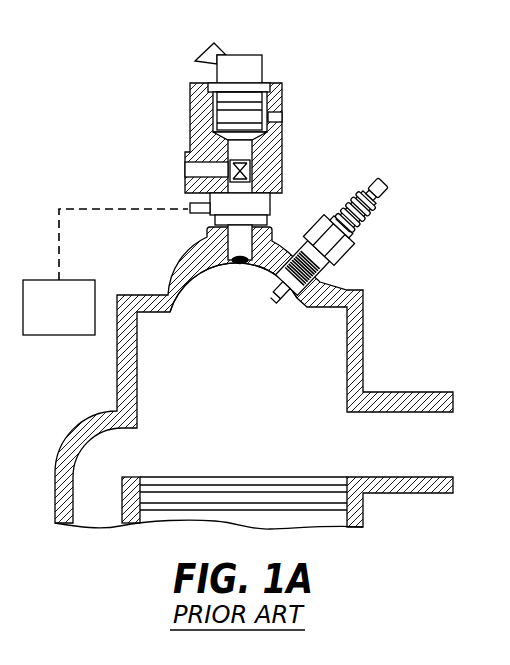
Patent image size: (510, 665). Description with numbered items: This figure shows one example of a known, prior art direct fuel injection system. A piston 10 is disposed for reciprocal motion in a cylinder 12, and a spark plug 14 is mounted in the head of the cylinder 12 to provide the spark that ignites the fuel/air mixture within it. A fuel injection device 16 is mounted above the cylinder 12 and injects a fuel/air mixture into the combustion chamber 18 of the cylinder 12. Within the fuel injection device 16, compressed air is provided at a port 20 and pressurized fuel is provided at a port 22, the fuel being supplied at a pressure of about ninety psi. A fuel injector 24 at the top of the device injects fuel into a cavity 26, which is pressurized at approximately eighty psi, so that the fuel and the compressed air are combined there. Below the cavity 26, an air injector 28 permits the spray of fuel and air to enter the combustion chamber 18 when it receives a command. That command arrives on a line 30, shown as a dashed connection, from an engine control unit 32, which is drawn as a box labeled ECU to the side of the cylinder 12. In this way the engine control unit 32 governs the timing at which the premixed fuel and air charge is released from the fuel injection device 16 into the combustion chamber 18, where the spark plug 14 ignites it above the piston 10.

The piston 10 is at (222, 476).
The cylinder 12 is at (347, 352).
The spark plug 14 is at (352, 228).
The fuel injection device 16 is at (200, 144).
The combustion chamber 18 is at (198, 287).
The port 20 is at (185, 168).
The port 22 is at (277, 118).
The fuel injector 24 is at (262, 65).
The cavity 26 is at (252, 170).
The air injector 28 is at (265, 210).
The line 30 is at (95, 211).
The engine control unit 32 is at (59, 335).